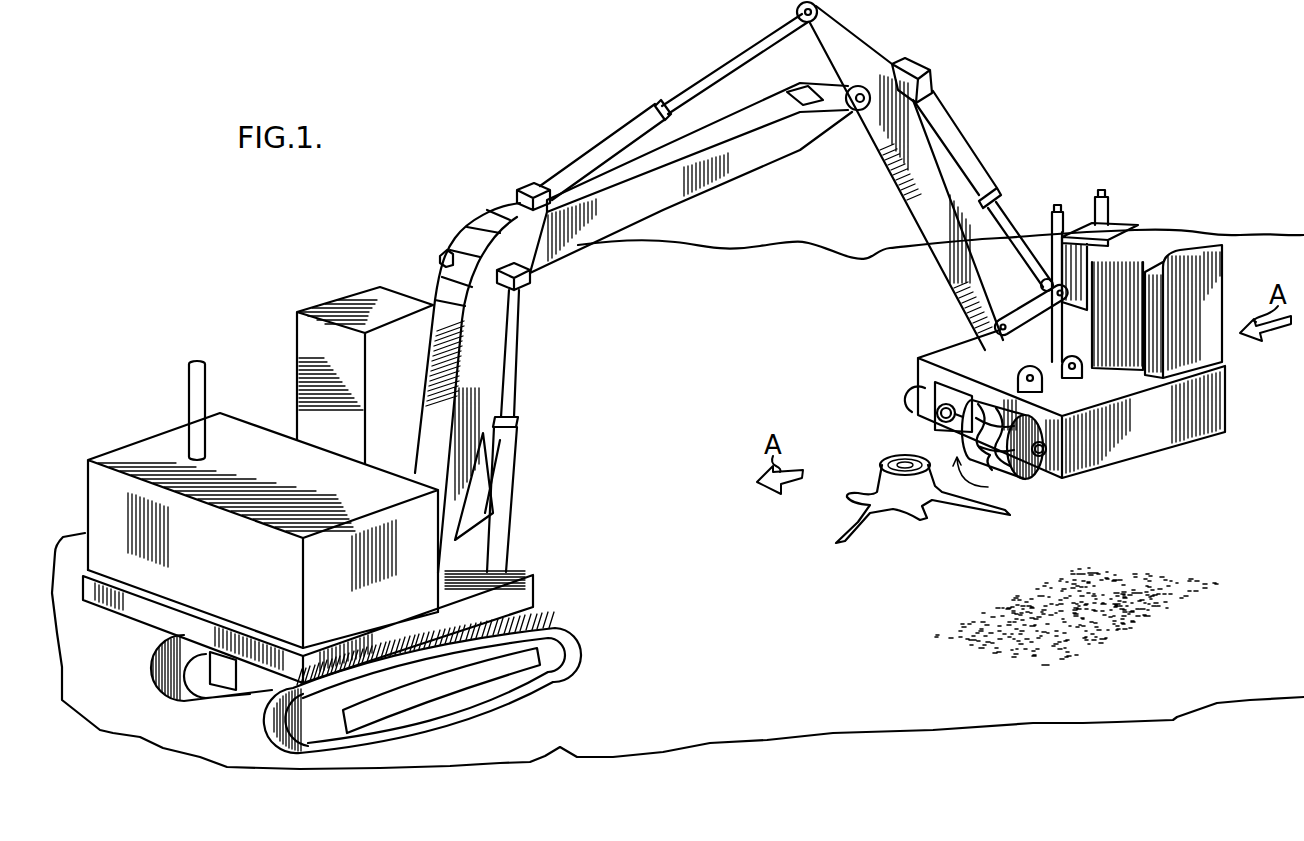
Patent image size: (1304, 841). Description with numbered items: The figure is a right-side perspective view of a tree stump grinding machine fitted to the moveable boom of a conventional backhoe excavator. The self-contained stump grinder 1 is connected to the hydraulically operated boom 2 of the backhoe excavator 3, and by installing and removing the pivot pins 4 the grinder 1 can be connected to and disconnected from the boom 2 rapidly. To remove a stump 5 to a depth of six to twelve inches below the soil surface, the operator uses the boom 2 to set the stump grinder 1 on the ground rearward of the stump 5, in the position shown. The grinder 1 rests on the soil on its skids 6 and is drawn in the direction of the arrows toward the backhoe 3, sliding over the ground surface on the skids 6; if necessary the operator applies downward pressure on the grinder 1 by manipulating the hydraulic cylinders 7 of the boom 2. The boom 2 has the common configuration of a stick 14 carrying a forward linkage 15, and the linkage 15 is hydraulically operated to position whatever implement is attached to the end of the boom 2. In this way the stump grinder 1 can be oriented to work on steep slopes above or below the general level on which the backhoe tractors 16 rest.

The stump grinder 1 is at (1095, 346).
The boom 2 is at (687, 200).
The backhoe excavator 3 is at (122, 443).
The pivot pins 4 is at (1040, 380).
The stump 5 is at (900, 497).
The skids 6 is at (1170, 447).
The hydraulic cylinders 7 is at (593, 157).
The stick 14 is at (924, 253).
The forward linkage 15 is at (1017, 300).
The backhoe tractors 16 is at (548, 615).